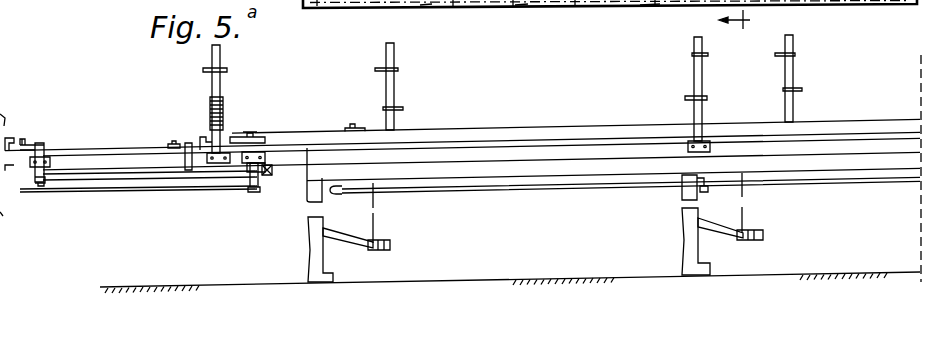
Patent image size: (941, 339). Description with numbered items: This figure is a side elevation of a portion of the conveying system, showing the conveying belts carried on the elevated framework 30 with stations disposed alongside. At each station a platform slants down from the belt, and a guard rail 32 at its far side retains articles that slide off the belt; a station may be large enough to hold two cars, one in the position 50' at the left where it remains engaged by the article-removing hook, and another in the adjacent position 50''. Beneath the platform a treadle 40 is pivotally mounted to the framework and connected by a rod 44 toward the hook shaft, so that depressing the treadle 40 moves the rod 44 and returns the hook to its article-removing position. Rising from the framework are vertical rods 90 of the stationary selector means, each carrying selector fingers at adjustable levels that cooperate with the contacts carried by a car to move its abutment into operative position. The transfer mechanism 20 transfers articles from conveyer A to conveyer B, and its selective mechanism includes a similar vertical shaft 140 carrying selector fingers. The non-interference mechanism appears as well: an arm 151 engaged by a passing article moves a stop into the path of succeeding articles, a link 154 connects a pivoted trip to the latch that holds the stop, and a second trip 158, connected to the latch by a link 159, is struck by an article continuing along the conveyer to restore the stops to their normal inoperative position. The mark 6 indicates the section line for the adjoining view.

The vertical shaft 140 is at (222, 70).
The arm 151 is at (245, 137).
The transfer mechanism 20 is at (187, 143).
The second trip 158 is at (28, 145).
The link 159 is at (107, 178).
The link 154 is at (290, 172).
The elevated framework 30 is at (504, 170).
The rod 44 is at (601, 185).
The treadle 40 is at (392, 247).
The vertical rod 90 is at (392, 88).
The car position 50'' is at (447, 23).
The car position 50' is at (543, 22).
The guard rail 32 is at (651, 6).
The section view indicator 6 is at (727, 21).